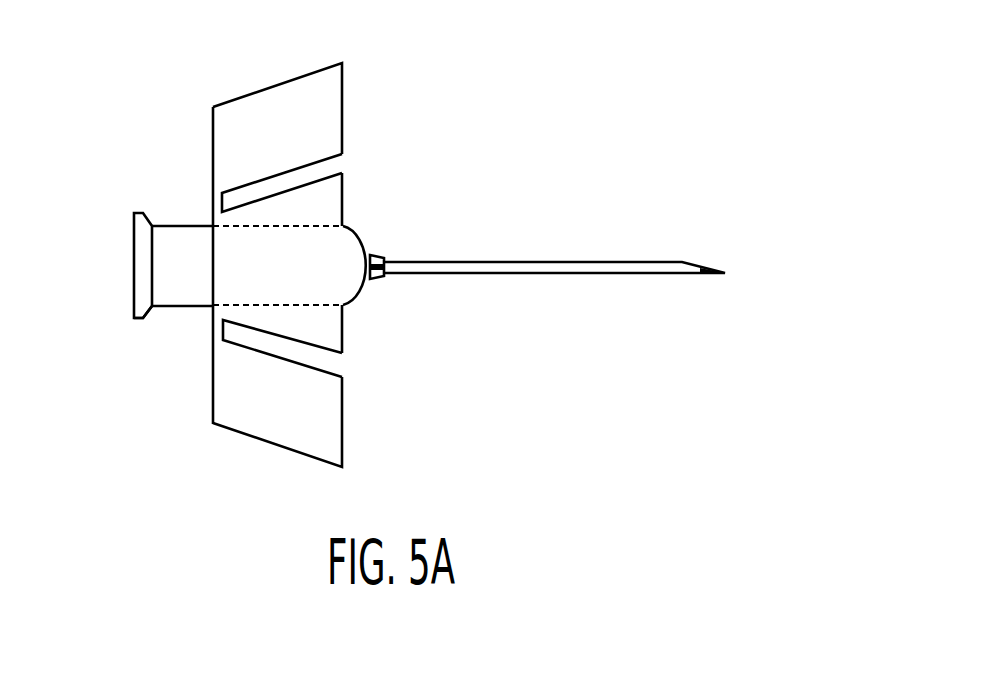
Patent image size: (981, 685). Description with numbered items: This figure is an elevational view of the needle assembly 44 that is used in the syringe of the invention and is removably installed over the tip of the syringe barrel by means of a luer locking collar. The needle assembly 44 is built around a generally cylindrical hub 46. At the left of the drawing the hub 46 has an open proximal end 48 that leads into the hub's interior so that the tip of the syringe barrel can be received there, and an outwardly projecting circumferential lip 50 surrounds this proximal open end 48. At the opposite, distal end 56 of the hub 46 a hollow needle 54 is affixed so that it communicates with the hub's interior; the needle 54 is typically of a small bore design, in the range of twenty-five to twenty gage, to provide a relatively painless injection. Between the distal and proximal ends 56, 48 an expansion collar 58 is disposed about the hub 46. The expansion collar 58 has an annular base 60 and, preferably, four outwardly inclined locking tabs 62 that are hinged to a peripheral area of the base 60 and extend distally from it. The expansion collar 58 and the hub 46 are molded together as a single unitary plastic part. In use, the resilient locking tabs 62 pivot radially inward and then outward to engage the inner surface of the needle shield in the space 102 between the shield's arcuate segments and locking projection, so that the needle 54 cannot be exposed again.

The needle assembly 44 is at (280, 68).
The hub 46 is at (175, 310).
The open proximal end 48 is at (134, 268).
The circumferential lip 50 is at (141, 316).
The hollow needle 54 is at (580, 263).
The distal end 56 is at (384, 258).
The expansion collar 58 is at (213, 118).
The annular base 60 is at (213, 397).
The locking tabs 62 is at (318, 127).
The space 102 is at (343, 87).